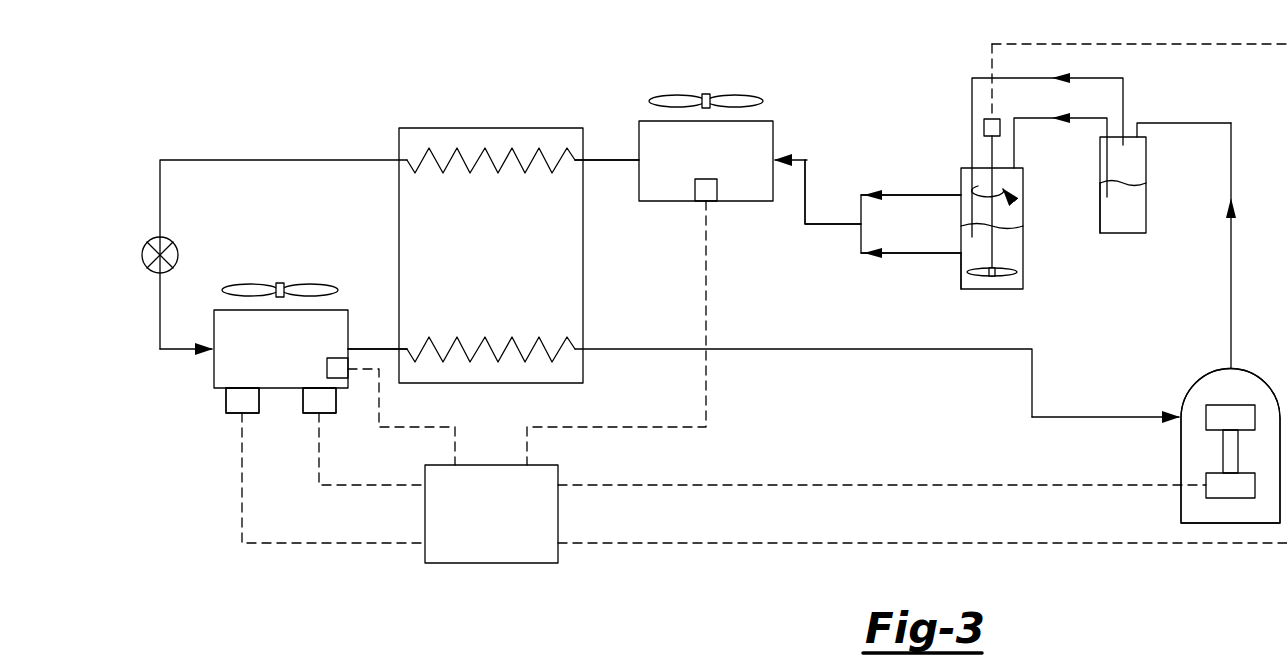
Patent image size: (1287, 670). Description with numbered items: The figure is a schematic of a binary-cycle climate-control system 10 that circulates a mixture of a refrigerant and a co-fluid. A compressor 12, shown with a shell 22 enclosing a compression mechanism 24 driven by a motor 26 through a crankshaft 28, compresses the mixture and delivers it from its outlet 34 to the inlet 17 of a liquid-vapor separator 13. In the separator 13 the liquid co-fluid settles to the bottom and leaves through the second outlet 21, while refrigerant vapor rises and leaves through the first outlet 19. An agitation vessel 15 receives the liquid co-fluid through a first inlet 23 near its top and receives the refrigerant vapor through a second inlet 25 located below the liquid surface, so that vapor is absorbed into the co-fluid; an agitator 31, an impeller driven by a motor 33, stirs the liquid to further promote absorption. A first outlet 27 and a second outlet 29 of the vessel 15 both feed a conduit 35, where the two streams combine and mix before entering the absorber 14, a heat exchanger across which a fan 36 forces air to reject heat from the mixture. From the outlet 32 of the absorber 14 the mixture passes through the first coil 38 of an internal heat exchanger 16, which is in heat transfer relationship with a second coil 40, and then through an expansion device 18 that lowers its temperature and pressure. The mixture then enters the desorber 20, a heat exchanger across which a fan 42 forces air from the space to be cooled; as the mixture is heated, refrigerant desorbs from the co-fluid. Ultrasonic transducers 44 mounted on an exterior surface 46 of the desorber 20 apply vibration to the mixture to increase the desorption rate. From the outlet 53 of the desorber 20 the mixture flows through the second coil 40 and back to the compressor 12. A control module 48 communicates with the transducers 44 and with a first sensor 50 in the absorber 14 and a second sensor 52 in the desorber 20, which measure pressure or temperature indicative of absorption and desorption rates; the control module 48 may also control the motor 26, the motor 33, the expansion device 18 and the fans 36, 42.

The binary-cycle climate-control system 10 is at (278, 120).
The compressor 12 is at (1212, 362).
The liquid-vapor separator 13 is at (1098, 206).
The absorber 14 is at (773, 131).
The agitation vessel 15 is at (958, 273).
The internal heat exchanger 16 is at (565, 124).
The inlet 17 is at (1142, 137).
The expansion device 18 is at (149, 242).
The first outlet 19 is at (1124, 133).
The desorber 20 is at (214, 366).
The second outlet 21 is at (1107, 199).
The shell 22 is at (1181, 420).
The first inlet 23 is at (1016, 170).
The compression mechanism 24 is at (1206, 412).
The second inlet 25 is at (972, 240).
The motor 26 is at (1206, 490).
The first outlet 27 is at (961, 252).
The crankshaft 28 is at (1223, 455).
The second outlet 29 is at (961, 192).
The agitator 31 is at (1000, 277).
The outlet 32 is at (637, 162).
The motor 33 is at (984, 126).
The outlet 34 is at (1232, 366).
The conduit 35 is at (806, 180).
The fan 36 is at (762, 98).
The first coil 38 is at (500, 173).
The second coil 40 is at (457, 340).
The fan 42 is at (258, 284).
The ultrasonic transducers 44 is at (242, 416).
The exterior surface 46 is at (226, 392).
The control module 48 is at (440, 564).
The first sensor 50 is at (717, 192).
The second sensor 52 is at (335, 357).
The outlet 53 is at (349, 348).